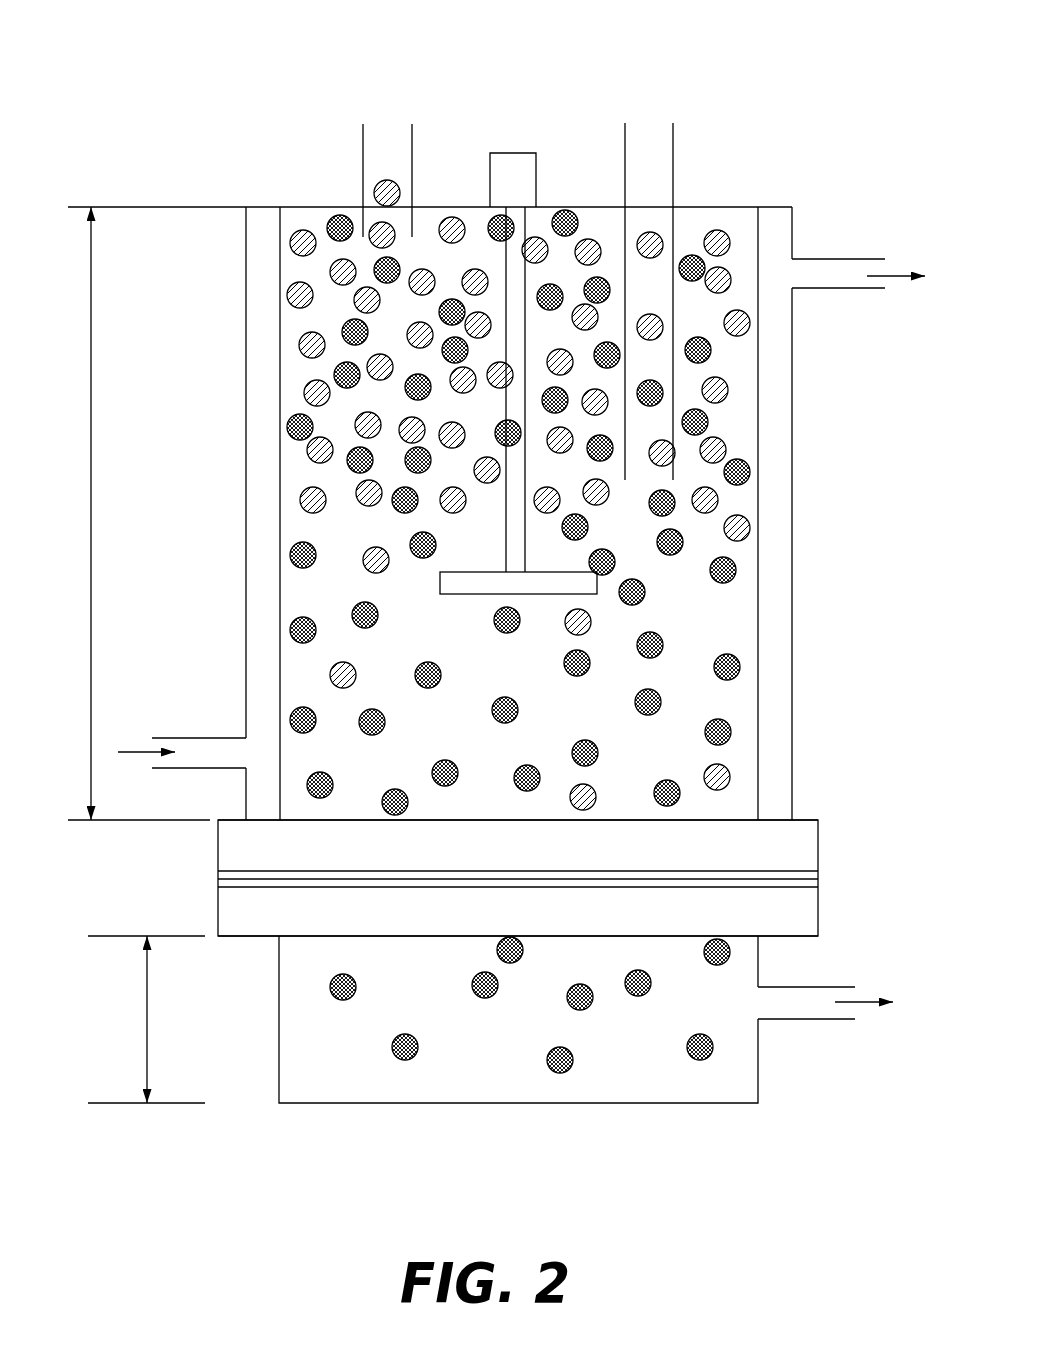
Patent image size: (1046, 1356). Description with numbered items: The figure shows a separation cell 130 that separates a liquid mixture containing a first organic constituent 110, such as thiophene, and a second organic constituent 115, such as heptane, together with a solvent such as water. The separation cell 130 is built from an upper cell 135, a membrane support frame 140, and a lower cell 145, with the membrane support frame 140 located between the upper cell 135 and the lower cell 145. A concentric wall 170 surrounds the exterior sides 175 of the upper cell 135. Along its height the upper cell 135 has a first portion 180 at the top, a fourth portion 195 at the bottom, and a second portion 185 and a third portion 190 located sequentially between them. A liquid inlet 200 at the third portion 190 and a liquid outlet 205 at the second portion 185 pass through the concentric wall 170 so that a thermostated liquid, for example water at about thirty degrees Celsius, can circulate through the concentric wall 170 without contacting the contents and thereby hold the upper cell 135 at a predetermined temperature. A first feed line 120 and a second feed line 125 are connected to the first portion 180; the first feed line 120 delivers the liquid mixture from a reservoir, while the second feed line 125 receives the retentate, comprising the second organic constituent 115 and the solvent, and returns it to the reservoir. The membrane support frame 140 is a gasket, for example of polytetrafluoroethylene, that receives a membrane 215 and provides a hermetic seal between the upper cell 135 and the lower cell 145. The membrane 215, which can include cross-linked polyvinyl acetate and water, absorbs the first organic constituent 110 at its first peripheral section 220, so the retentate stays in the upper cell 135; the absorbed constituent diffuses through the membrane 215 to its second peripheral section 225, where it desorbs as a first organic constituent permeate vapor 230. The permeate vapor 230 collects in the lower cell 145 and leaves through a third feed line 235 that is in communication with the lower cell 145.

The separation cell 130 is at (531, 27).
The first organic constituent 110 is at (333, 218).
The second organic constituent 115 is at (452, 208).
The first feed line 120 is at (685, 158).
The second feed line 125 is at (363, 153).
The upper cell 135 is at (91, 430).
The membrane support frame 140 is at (218, 855).
The lower cell 145 is at (128, 1017).
The concentric wall 170 is at (246, 268).
The exterior sides 175 is at (278, 362).
The first portion 180 is at (737, 207).
The second portion 185 is at (786, 272).
The third portion 190 is at (262, 755).
The fourth portion 195 is at (683, 818).
The liquid inlet 200 is at (160, 738).
The liquid outlet 205 is at (885, 252).
The membrane 215 is at (795, 855).
The first peripheral section 220 is at (725, 828).
The second peripheral section 225 is at (723, 925).
The first organic constituent permeate vapor 230 is at (497, 950).
The third feed line 235 is at (830, 1035).